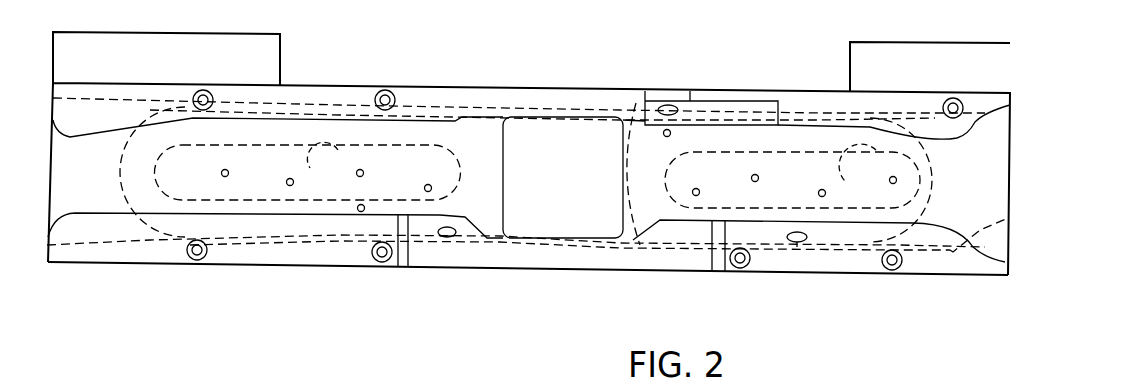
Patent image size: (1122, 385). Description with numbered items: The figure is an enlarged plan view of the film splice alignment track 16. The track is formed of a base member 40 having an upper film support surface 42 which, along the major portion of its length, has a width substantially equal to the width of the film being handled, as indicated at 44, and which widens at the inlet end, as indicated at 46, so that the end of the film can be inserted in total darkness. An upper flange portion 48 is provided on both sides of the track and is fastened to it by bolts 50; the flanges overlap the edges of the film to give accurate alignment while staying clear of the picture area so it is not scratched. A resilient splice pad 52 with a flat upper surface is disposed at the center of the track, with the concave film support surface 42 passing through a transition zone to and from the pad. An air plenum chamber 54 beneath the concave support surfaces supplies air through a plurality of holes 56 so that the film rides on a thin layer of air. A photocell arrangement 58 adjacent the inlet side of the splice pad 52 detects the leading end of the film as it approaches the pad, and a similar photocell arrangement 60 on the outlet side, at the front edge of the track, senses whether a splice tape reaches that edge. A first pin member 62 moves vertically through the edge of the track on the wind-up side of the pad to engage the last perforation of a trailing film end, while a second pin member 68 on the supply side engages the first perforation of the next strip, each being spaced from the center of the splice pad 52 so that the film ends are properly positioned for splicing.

The film splice alignment track 16 is at (553, 274).
The base member 40 is at (983, 175).
The upper film support surface 42 is at (814, 192).
The film-width portion 44 is at (636, 158).
The widened inlet end 46 is at (1010, 217).
The upper flange portion 48 is at (458, 96).
The bolts 50 is at (197, 260).
The resilient splice pad 52 is at (571, 192).
The air plenum chamber 54 is at (601, 169).
The holes 56 is at (288, 180).
The photocell arrangement 58 is at (668, 105).
The photocell arrangement 60 is at (364, 205).
The first pin member 62 is at (450, 227).
The second pin member 68 is at (797, 243).